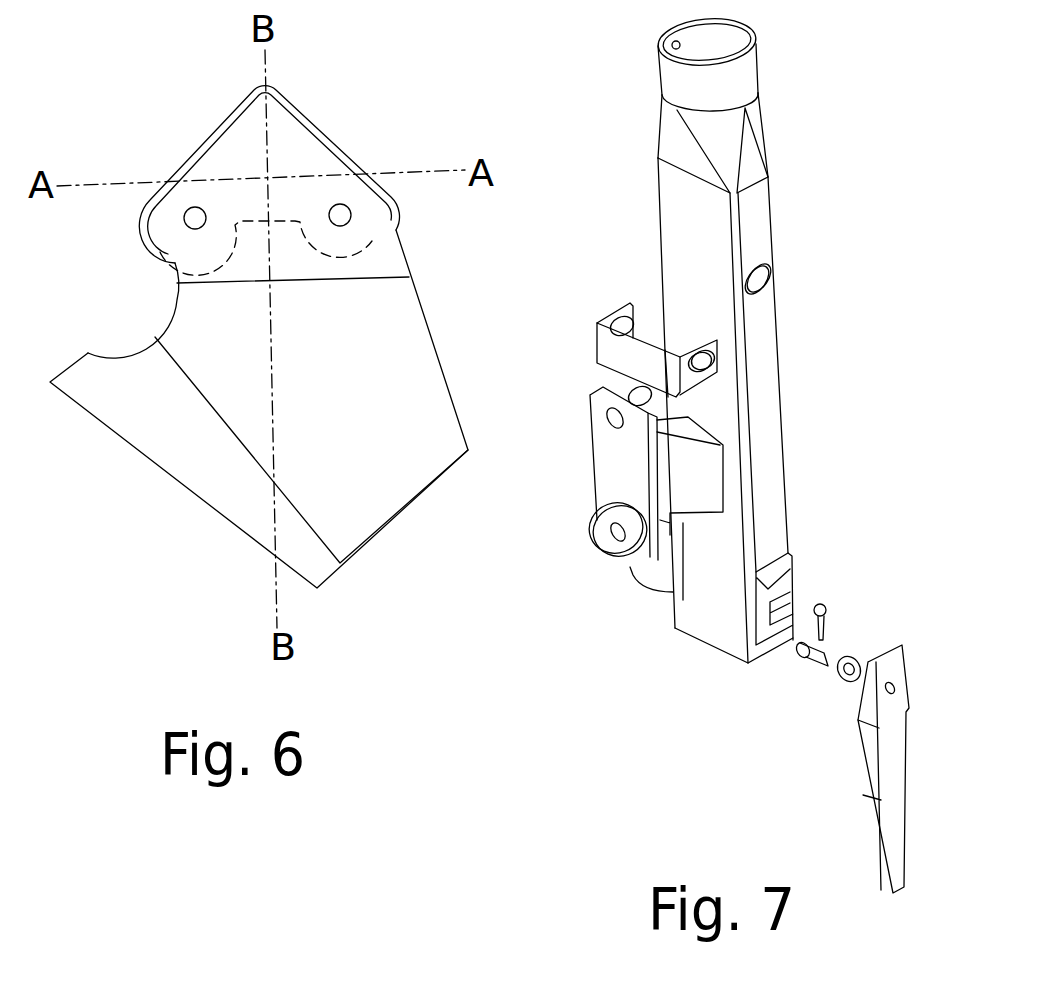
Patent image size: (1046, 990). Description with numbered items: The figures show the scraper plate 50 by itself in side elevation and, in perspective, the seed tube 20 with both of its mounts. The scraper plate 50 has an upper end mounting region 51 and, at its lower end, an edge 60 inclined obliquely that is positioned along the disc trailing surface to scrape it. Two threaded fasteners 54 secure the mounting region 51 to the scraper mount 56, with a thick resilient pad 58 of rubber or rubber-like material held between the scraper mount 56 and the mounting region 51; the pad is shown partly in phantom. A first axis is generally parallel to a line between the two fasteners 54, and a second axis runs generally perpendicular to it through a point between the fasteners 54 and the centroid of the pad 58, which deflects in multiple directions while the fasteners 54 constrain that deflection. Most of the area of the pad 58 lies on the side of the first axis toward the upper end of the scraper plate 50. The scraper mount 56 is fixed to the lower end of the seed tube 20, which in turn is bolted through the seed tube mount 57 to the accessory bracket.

In FIG. 7, the seed tube 20 is at (762, 225).
In FIG. 6, the scraper plate 50 is at (393, 343).
In FIG. 6, the upper end mounting region 51 is at (231, 147).
In FIG. 6, the threaded fasteners 54 is at (205, 220).
In FIG. 7, the scraper mount 56 is at (657, 573).
In FIG. 7, the seed tube mount 57 is at (608, 467).
In FIG. 6, the resilient pad 58 is at (306, 108).
In FIG. 6, the edge 60 is at (170, 470).